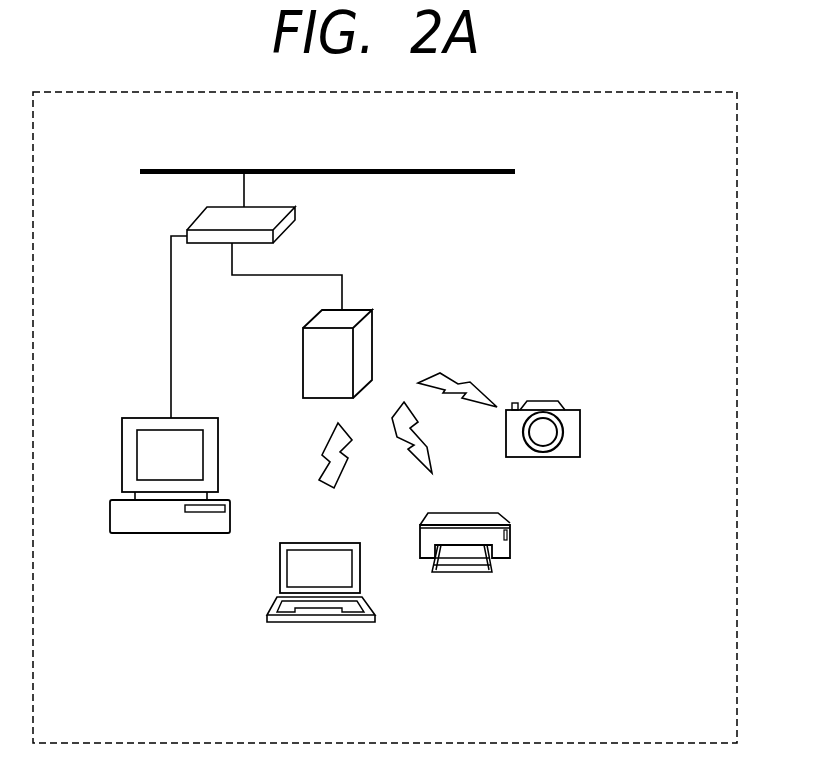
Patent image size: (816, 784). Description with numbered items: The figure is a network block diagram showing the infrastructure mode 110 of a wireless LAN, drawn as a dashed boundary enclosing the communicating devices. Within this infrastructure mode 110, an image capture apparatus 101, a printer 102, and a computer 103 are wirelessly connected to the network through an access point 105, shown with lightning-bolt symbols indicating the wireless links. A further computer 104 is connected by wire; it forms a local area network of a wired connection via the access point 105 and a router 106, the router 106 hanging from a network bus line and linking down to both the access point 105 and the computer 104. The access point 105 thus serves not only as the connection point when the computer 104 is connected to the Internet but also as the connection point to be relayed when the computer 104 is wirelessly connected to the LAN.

The infrastructure mode 110 is at (625, 92).
The router 106 is at (295, 215).
The access point 105 is at (372, 322).
The image capture apparatus 101 is at (581, 423).
The printer 102 is at (512, 538).
The computer 103 is at (302, 627).
The computer 104 is at (168, 533).